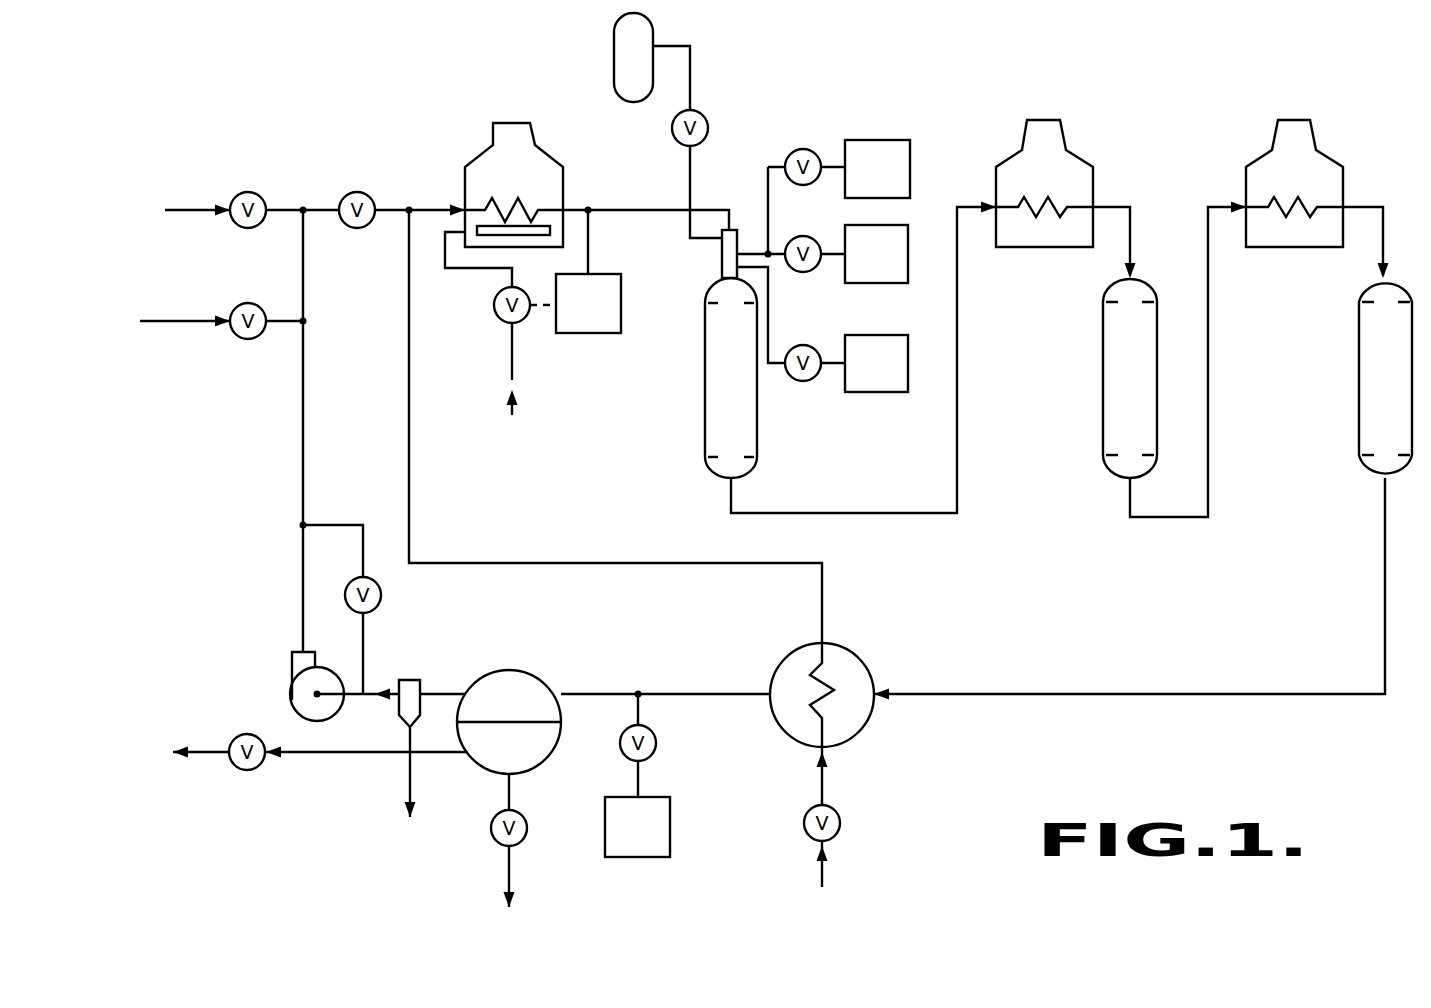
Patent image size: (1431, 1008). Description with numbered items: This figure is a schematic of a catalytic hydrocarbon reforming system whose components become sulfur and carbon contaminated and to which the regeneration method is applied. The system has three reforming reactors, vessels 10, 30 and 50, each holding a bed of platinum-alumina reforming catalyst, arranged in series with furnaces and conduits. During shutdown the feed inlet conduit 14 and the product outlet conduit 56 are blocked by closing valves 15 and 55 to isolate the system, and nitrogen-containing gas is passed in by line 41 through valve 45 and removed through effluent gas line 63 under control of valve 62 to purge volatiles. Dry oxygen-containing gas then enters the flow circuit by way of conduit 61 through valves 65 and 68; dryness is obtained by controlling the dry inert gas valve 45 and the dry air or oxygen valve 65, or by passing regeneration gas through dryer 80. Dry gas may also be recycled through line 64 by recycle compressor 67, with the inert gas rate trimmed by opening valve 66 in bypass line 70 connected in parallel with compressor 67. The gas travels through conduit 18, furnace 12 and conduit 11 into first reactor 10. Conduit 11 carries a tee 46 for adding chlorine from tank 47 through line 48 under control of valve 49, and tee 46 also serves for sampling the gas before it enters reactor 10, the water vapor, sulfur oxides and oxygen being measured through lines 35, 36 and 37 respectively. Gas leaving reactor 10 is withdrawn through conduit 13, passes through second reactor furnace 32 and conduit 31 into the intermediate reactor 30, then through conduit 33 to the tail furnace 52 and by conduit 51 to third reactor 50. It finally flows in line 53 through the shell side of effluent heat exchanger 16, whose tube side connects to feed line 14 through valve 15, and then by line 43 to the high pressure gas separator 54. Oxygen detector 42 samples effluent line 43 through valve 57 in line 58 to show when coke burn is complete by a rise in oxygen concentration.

The first reactor 10 is at (703, 400).
The conduit 11 is at (620, 208).
The furnace 12 is at (493, 136).
The conduit 13 is at (727, 512).
The feed inlet conduit 14 is at (822, 877).
The valve 15 is at (838, 825).
The effluent heat exchanger 16 is at (862, 662).
The conduit 18 is at (431, 207).
The second reactor 30 is at (1102, 378).
The conduit 31 is at (1113, 206).
The second reactor furnace 32 is at (1020, 143).
The conduit 33 is at (1163, 520).
The line 35 is at (832, 370).
The line 36 is at (833, 158).
The line 37 is at (832, 260).
The line 41 is at (190, 322).
The oxygen detector 42 is at (672, 800).
The line 43 is at (578, 692).
The valve 45 is at (247, 340).
The tee 46 is at (720, 258).
The tank 47 is at (655, 31).
The line 48 is at (690, 170).
The valve 49 is at (704, 119).
The third reactor 50 is at (1358, 378).
The conduit 51 is at (1368, 206).
The tail furnace 52 is at (1270, 143).
The line 53 is at (1383, 548).
The high pressure gas separator 54 is at (518, 670).
The valve 55 is at (527, 829).
The product outlet conduit 56 is at (509, 875).
The valve 57 is at (657, 744).
The line 58 is at (641, 710).
The conduit 61 is at (195, 210).
The valve 62 is at (248, 770).
The effluent gas line 63 is at (210, 752).
The line 64 is at (303, 575).
The valve 65 is at (256, 193).
The valve 66 is at (381, 595).
The recycle compressor 67 is at (291, 671).
The valve 68 is at (360, 192).
The bypass line 70 is at (340, 522).
The dryer 80 is at (410, 680).